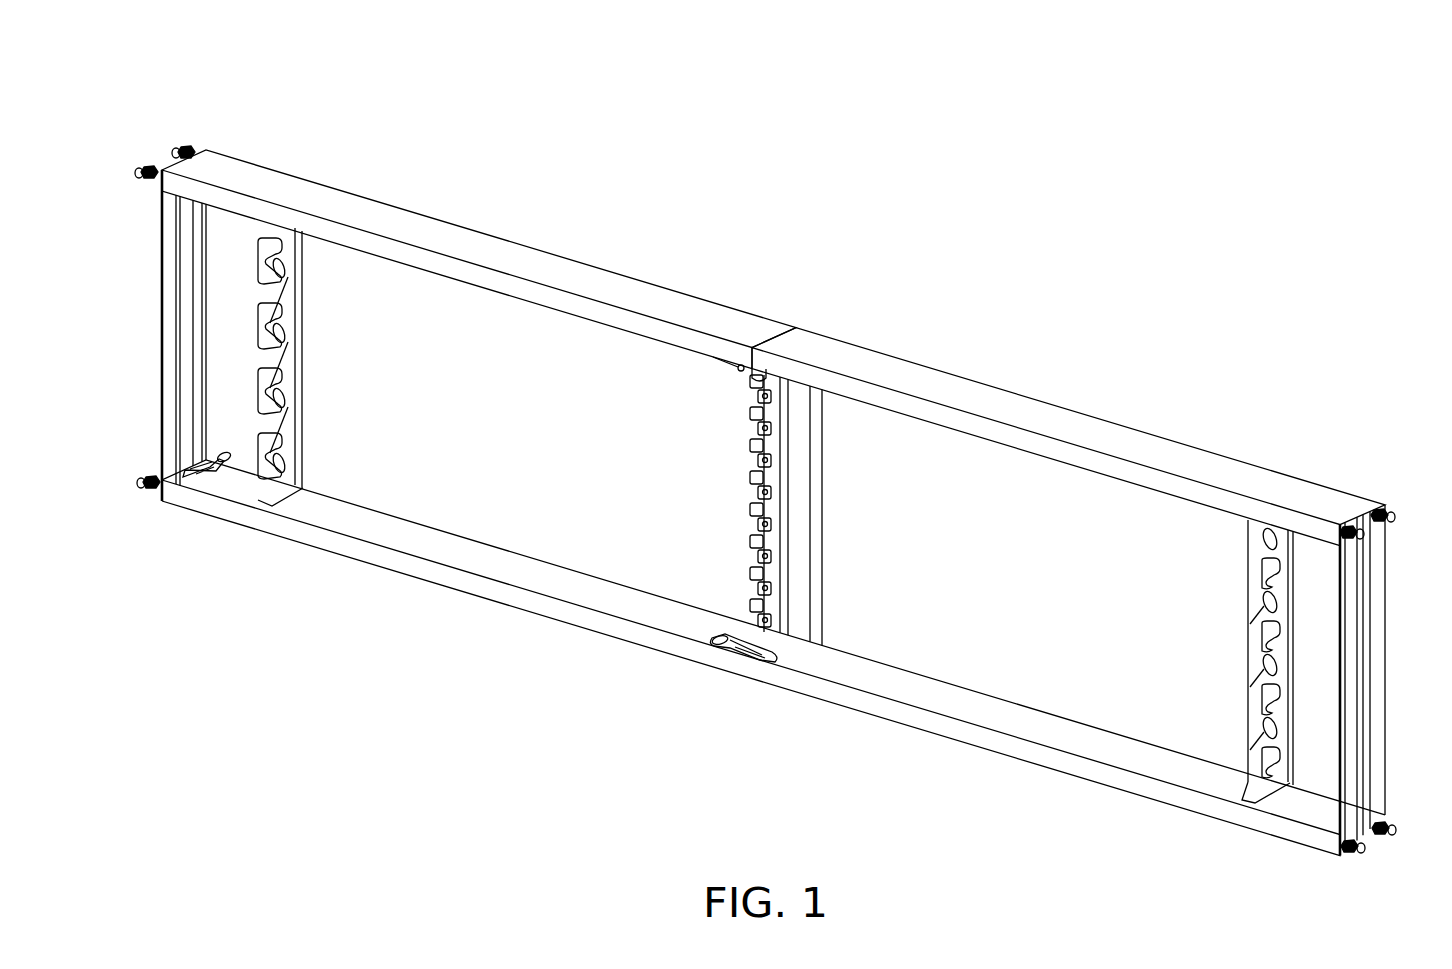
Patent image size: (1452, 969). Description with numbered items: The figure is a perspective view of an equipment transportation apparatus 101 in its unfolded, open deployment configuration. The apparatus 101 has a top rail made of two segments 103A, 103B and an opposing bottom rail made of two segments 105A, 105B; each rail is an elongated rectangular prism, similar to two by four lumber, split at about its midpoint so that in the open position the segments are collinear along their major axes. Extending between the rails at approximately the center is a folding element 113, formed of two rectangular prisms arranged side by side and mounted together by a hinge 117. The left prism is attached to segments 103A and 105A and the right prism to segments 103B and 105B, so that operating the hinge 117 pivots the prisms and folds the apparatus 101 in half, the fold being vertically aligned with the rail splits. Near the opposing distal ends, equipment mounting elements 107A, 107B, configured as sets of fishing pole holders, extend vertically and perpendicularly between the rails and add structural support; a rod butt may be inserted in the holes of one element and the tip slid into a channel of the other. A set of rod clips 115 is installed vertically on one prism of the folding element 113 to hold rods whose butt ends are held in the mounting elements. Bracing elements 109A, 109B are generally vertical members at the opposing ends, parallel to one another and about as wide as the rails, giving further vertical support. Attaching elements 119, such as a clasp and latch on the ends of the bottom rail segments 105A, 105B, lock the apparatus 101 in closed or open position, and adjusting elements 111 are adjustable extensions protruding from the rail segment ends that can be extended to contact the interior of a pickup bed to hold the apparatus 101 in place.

The equipment transportation apparatus 101 is at (1203, 271).
The top rail segment 103A is at (502, 230).
The top rail segment 103B is at (900, 356).
The bottom rail segment 105A is at (462, 597).
The bottom rail segment 105B is at (960, 740).
The equipment mounting element 107A is at (298, 272).
The equipment mounting element 107B is at (1291, 540).
The bracing element 109A is at (158, 322).
The bracing element 109B is at (1395, 625).
The adjusting element 111 is at (183, 148).
The folding element 113 is at (797, 410).
The rod clips 115 is at (745, 545).
The hinge 117 is at (785, 628).
The attaching element 119 is at (210, 472).